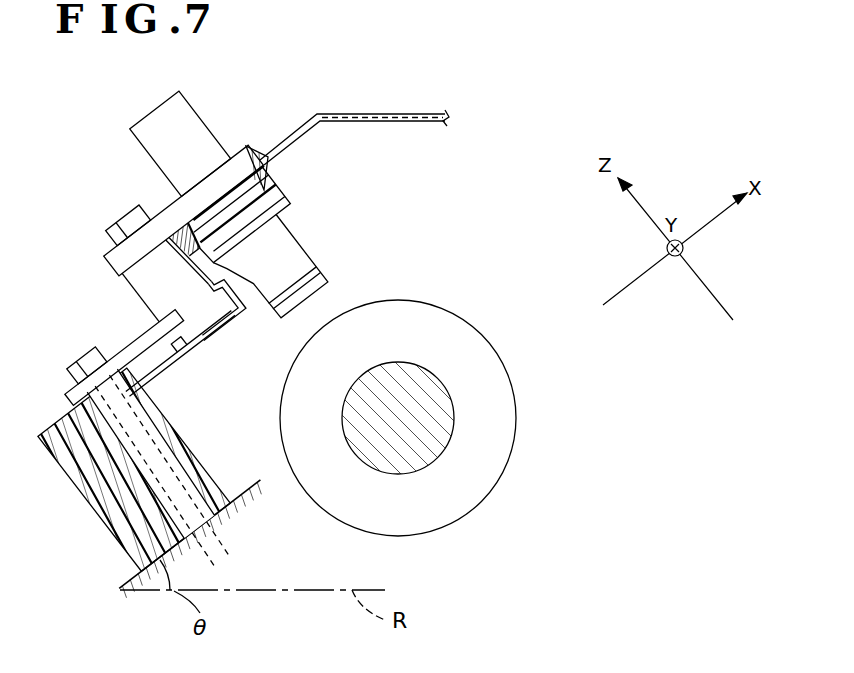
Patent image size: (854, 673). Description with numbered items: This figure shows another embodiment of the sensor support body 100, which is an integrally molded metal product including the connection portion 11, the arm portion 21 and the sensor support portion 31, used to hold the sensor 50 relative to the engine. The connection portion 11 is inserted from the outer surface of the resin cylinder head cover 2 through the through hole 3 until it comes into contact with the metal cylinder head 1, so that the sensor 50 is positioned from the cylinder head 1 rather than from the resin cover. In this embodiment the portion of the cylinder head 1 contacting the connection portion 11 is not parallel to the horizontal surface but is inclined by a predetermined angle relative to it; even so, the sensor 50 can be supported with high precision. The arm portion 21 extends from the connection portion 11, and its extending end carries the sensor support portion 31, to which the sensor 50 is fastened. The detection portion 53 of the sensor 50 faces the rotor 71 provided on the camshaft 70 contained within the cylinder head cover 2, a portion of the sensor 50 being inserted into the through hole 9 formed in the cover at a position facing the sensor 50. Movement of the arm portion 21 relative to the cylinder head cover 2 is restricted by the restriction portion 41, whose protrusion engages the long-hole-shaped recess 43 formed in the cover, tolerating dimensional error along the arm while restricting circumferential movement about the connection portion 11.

The cylinder head 1 is at (240, 488).
The cylinder head cover 2 is at (366, 114).
The through hole 3 is at (120, 440).
The through hole 9 is at (240, 170).
The connection portion 11 is at (148, 495).
The arm portion 21 is at (140, 343).
The sensor support portion 31 is at (192, 303).
The restriction portion 41 is at (185, 360).
The recess 43 is at (168, 352).
The sensor 50 is at (196, 105).
The detection portion 53 is at (318, 266).
The camshaft 70 is at (432, 372).
The rotor 71 is at (420, 300).
The sensor support body 100 is at (101, 359).